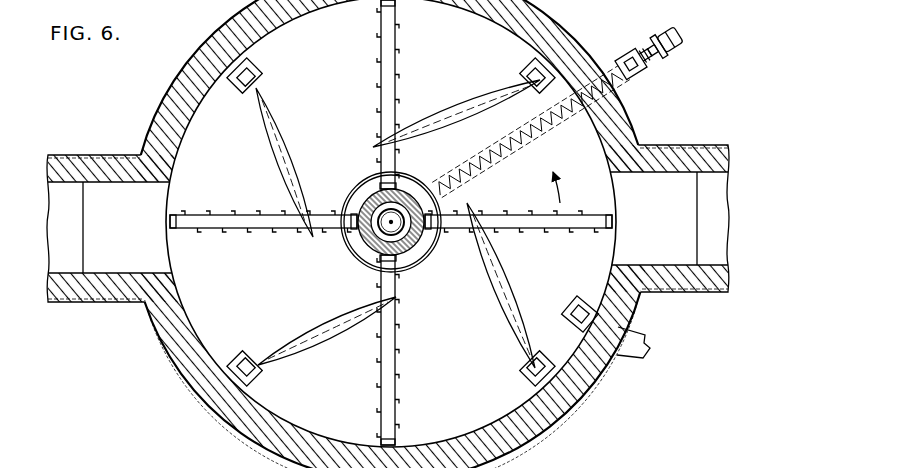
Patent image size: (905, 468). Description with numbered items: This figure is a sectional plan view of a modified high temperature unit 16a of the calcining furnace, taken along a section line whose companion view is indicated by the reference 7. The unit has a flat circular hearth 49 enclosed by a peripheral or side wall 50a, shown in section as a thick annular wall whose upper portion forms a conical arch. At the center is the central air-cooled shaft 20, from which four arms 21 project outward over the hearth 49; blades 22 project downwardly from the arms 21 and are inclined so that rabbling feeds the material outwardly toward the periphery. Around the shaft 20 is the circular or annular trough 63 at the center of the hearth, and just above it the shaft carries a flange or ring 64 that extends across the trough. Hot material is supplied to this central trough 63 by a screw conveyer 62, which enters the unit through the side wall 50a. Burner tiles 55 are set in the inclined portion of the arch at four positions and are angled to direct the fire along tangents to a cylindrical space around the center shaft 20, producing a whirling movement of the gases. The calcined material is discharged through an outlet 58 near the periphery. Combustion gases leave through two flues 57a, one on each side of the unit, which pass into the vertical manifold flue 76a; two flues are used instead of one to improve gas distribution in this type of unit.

The high temperature unit 16a is at (161, 103).
The hearth 49 is at (223, 340).
The peripheral or side wall 50a is at (583, 397).
The flue 57a is at (133, 253).
The vertical manifold flue 76a is at (72, 262).
The Fig. 7 section line 7 is at (127, 227).
The arms 21 is at (396, 86).
The blades 22 is at (490, 213).
The burner tiles 55 is at (258, 66).
The circular or annular trough 63 is at (412, 268).
The flange or ring 64 is at (425, 238).
The central air-cooled shaft 20 is at (400, 192).
The screw conveyer 62 is at (540, 137).
The outlet 58 is at (575, 310).